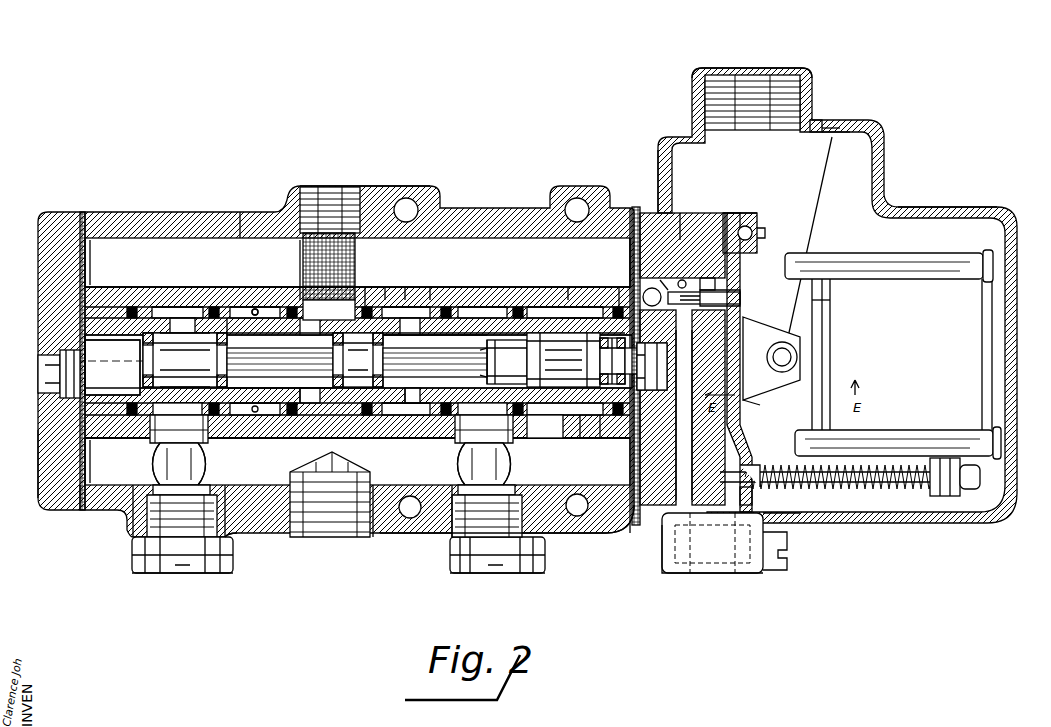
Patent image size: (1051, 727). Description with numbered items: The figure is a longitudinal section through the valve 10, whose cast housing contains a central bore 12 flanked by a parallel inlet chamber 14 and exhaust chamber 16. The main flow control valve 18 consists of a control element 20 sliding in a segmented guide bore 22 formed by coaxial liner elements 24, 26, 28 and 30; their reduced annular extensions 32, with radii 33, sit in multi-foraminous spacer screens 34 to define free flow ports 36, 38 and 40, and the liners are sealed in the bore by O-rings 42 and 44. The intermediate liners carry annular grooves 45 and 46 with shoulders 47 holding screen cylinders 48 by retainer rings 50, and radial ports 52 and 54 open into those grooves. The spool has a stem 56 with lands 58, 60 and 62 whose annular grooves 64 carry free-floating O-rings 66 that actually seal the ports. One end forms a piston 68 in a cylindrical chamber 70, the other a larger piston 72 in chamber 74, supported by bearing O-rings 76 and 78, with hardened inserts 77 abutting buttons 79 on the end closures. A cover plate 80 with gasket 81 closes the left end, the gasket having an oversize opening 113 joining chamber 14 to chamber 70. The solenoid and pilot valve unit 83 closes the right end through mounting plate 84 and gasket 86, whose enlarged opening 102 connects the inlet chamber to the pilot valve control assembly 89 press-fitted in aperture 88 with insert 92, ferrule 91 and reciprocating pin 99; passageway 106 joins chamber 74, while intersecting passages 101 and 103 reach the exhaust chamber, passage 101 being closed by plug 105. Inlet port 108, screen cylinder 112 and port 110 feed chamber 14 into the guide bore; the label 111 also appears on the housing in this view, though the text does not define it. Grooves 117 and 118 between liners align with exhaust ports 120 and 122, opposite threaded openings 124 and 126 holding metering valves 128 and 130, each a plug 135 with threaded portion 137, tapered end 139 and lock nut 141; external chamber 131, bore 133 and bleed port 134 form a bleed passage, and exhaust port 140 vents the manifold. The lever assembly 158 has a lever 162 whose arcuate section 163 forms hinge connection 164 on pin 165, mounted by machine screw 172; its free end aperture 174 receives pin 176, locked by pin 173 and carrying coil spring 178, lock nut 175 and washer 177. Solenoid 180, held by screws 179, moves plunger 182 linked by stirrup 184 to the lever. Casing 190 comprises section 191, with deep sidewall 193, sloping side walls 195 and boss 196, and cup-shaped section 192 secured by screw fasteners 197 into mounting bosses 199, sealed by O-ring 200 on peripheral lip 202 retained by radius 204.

The valve 10 is at (473, 204).
The bore 12 is at (475, 300).
The inlet chamber 14 is at (510, 232).
The exhaust chamber 16 is at (605, 525).
The flow control valve 18 is at (392, 300).
The control element 20 is at (143, 378).
The guide bore 22 is at (100, 341).
The liner element 24 is at (100, 285).
The liner element 26 is at (240, 300).
The liner element 28 is at (385, 290).
The liner element 30 is at (568, 300).
The annular extensions 32 is at (345, 426).
The radii 33 is at (470, 388).
The spacer screens 34 is at (497, 306).
The free flow port 36 is at (185, 360).
The free flow port 38 is at (310, 420).
The free flow port 40 is at (482, 420).
The O-rings 42 is at (367, 416).
The O-ring 44 is at (619, 306).
The annular groove 45 is at (262, 300).
The annular groove 46 is at (405, 300).
The shoulders 47 is at (430, 300).
The screen cylinders 48 is at (418, 418).
The retainer rings 50 is at (393, 416).
The radial ports 52 is at (262, 396).
The radial ports 54 is at (435, 362).
The stem 56 is at (435, 318).
The land 58 is at (205, 318).
The land 60 is at (350, 335).
The land 62 is at (487, 362).
The annular grooves 64 is at (265, 358).
The O-rings 66 is at (355, 390).
The piston 68 is at (141, 362).
The cylindrical chamber 70 is at (90, 395).
The piston 72 is at (565, 320).
The cylindrical chamber 74 is at (590, 300).
The O-ring 76 is at (141, 350).
The hardened steel inserts 77 is at (605, 360).
The O-ring 78 is at (563, 360).
The buttons 79 is at (66, 350).
The cover plate 80 is at (48, 465).
The gasket 81 is at (80, 512).
The solenoid and pilot valve assembly unit 83 is at (797, 538).
The mounting plate 84 is at (648, 505).
The gasket 86 is at (628, 520).
The aperture 88 is at (684, 280).
The pilot valve control assembly 89 is at (705, 278).
The ferrule 91 is at (690, 306).
The annular insert 92 is at (668, 278).
The reciprocating pin 99 is at (700, 345).
The passage 101 is at (700, 377).
The enlarged opening 102 is at (630, 248).
The passage 103 is at (676, 430).
The plug 105 is at (660, 540).
The passageway 106 is at (654, 307).
The inlet port 108 is at (340, 192).
The port 110 is at (372, 300).
The passage 111 is at (240, 222).
The screen cylinder 112 is at (303, 252).
The oversize opening 113 is at (83, 240).
The annular groove 117 is at (177, 409).
The annular groove 118 is at (460, 450).
The port 120 is at (150, 440).
The port 122 is at (514, 455).
The threaded opening 124 is at (140, 520).
The threaded opening 126 is at (405, 522).
The metering valve 128 is at (227, 568).
The metering valve 130 is at (532, 570).
The external chamber 131 is at (600, 438).
The bore 133 is at (545, 426).
The bleed port 134 is at (580, 438).
The plug 135 is at (208, 470).
The threaded portion 137 is at (240, 537).
The tapered end 139 is at (206, 455).
The exhaust port 140 is at (345, 537).
The lock nut 141 is at (470, 558).
The operating lever assembly 158 is at (770, 397).
The lever 162 is at (795, 440).
The arcuate section 163 is at (732, 220).
The hinge connection 164 is at (745, 210).
The pin 165 is at (765, 233).
The machine screw 172 is at (690, 214).
The locking pin 173 is at (712, 543).
The aperture 174 is at (728, 455).
The lock nut 175 is at (958, 491).
The pin 176 is at (870, 488).
The washer 177 is at (965, 488).
The coil spring 178 is at (760, 490).
The screws 179 is at (995, 262).
The solenoid 180 is at (851, 247).
The plunger 182 is at (831, 305).
The stirrup 184 is at (801, 345).
The casing 190 is at (907, 129).
The casing section 191 is at (665, 140).
The casing section 192 is at (935, 207).
The deep sidewall 193 is at (792, 135).
The sloping side walls 195 is at (820, 182).
The boss 196 is at (780, 75).
The screw fasteners 197 is at (775, 571).
The mounting bosses 199 is at (675, 573).
The O-ring 200 is at (815, 122).
The peripheral lip 202 is at (742, 518).
The radius 204 is at (835, 128).